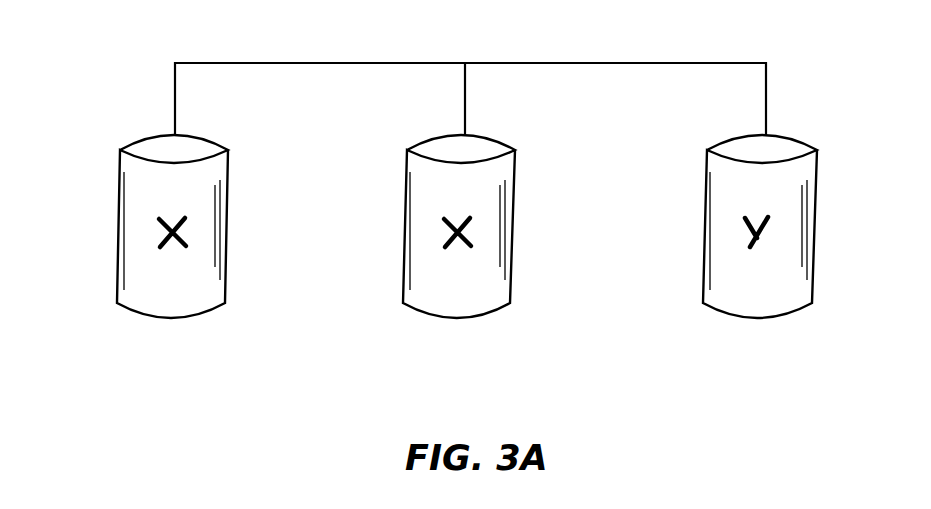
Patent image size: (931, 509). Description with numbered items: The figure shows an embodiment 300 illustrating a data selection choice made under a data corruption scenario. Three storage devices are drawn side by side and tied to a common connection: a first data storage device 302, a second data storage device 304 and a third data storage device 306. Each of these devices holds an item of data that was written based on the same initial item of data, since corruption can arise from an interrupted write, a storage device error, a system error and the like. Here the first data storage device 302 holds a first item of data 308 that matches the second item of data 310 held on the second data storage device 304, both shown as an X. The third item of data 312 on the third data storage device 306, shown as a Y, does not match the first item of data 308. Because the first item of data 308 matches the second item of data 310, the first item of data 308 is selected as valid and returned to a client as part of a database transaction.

The embodiment 300 is at (156, 56).
The first data storage device 302 is at (182, 318).
The second data storage device 304 is at (495, 312).
The third data storage device 306 is at (770, 318).
The first item of data 308 is at (133, 215).
The second item of data 310 is at (442, 230).
The third item of data 312 is at (743, 218).